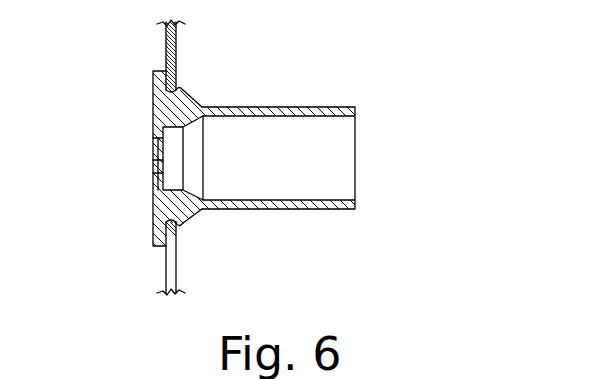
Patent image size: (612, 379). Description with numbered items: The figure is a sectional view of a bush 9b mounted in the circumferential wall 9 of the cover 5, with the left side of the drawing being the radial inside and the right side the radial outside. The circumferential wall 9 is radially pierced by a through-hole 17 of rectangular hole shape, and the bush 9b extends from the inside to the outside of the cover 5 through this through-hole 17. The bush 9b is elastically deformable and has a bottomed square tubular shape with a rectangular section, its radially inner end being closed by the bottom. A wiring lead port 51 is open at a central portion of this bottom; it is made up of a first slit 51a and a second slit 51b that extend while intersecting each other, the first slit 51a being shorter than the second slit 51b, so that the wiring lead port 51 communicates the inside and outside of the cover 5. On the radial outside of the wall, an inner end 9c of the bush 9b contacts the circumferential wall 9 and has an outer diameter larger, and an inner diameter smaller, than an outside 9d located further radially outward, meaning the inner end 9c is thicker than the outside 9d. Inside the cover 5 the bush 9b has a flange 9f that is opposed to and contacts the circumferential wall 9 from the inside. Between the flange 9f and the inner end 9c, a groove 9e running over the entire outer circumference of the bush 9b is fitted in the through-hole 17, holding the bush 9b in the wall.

The cover 5 is at (119, 254).
The circumferential wall 9 is at (177, 269).
The bush 9b is at (340, 106).
The inner end 9c is at (196, 95).
The outside 9d is at (307, 107).
The groove 9e is at (177, 75).
The flange 9f is at (148, 73).
The through-hole 17 is at (182, 226).
The wiring lead port 51 is at (153, 175).
The first slit 51a is at (152, 161).
The second slit 51b is at (152, 138).